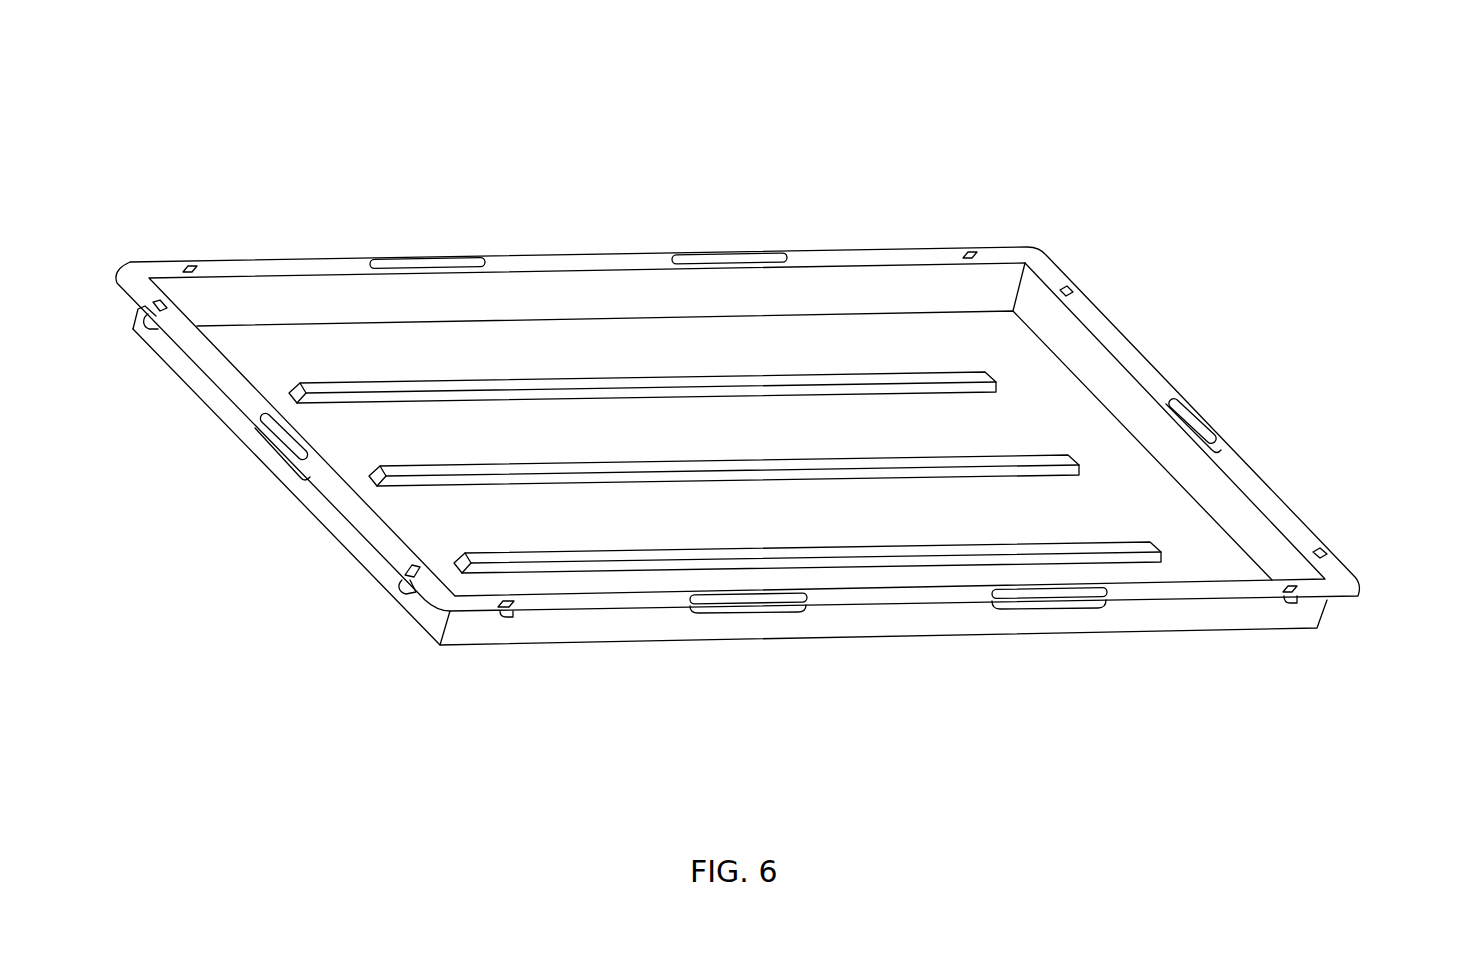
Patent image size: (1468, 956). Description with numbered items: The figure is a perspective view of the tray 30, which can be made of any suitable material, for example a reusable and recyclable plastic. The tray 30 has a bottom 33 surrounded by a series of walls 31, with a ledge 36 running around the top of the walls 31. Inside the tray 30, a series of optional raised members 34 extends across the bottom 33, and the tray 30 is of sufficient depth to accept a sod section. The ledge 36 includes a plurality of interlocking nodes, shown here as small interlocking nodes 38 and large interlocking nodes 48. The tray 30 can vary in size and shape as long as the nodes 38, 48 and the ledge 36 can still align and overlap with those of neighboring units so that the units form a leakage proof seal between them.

The tray 30 is at (222, 220).
The walls 31 is at (265, 295).
The bottom 33 is at (1140, 572).
The raised members 34 is at (812, 380).
The ledge 36 is at (1140, 357).
The small interlocking nodes 38 is at (1303, 591).
The large interlocking nodes 48 is at (767, 612).